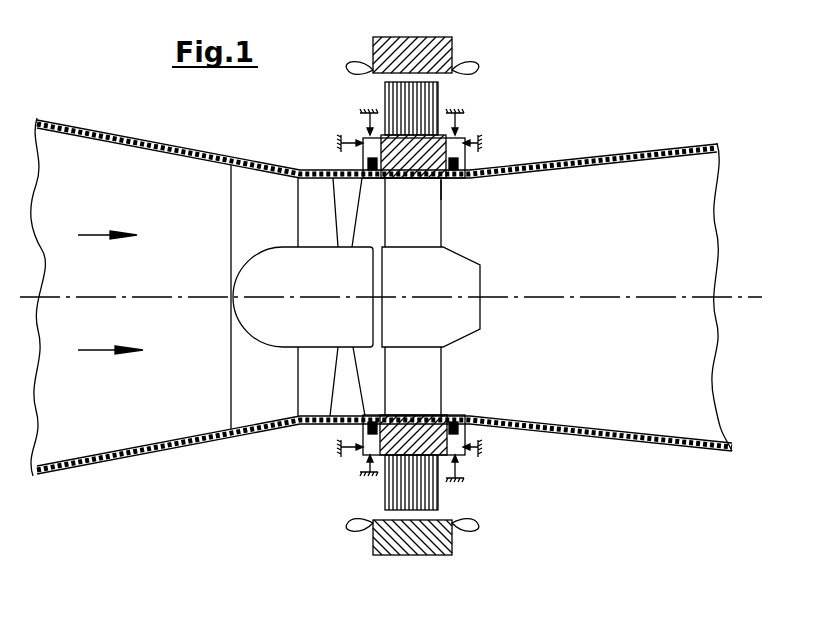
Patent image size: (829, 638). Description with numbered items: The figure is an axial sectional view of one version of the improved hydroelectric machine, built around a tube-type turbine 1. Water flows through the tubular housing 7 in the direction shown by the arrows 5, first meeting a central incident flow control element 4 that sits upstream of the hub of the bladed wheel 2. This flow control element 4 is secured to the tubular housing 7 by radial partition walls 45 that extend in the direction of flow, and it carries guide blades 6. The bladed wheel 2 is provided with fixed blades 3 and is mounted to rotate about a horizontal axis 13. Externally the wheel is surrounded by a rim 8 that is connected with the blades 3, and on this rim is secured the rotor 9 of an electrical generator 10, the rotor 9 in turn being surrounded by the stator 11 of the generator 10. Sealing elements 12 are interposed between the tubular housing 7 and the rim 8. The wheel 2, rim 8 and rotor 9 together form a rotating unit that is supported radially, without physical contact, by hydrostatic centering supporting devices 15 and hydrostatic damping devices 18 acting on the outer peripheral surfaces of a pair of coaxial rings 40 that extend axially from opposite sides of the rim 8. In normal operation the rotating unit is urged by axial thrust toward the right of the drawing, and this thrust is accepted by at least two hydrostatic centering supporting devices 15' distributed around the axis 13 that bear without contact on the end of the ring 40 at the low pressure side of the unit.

The tube-type turbine 1 is at (534, 224).
The bladed wheel 2 is at (452, 330).
The fixed blades 3 is at (432, 387).
The central incident flow control element 4 is at (258, 316).
The arrows indicating direction of flow 5 is at (88, 235).
The guide blades 6 is at (342, 200).
The tubular housing 7 is at (205, 446).
The rim 8 is at (443, 182).
The rotor 9 is at (402, 100).
The electrical generator 10 is at (508, 92).
The stator 11 is at (445, 44).
The sealing elements 12 is at (371, 180).
The horizontal axis 13 is at (608, 297).
The hydrostatic centering supporting devices 15 is at (420, 479).
The hydrostatic centering supporting devices 15' is at (495, 308).
The hydrostatic damping devices 18 is at (358, 118).
The coaxial rings 40 is at (428, 158).
The radial partition walls 45 is at (230, 198).